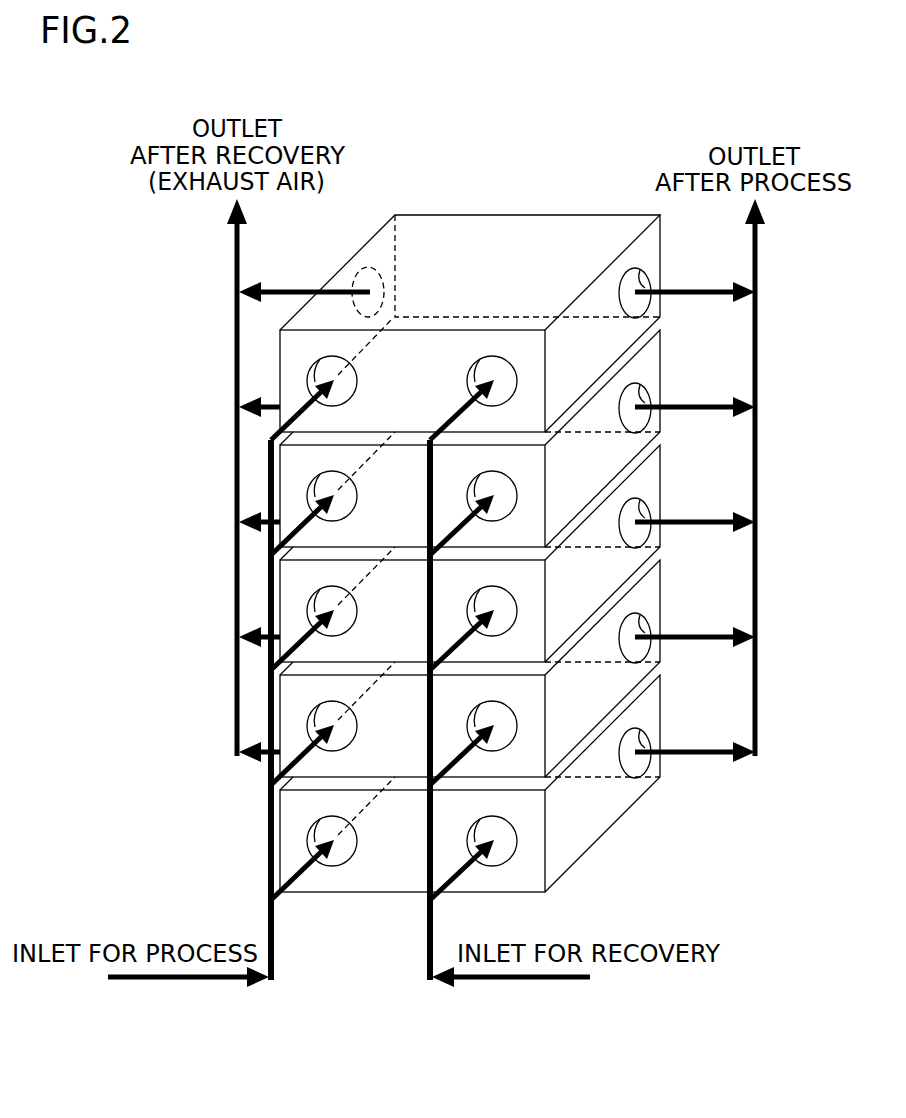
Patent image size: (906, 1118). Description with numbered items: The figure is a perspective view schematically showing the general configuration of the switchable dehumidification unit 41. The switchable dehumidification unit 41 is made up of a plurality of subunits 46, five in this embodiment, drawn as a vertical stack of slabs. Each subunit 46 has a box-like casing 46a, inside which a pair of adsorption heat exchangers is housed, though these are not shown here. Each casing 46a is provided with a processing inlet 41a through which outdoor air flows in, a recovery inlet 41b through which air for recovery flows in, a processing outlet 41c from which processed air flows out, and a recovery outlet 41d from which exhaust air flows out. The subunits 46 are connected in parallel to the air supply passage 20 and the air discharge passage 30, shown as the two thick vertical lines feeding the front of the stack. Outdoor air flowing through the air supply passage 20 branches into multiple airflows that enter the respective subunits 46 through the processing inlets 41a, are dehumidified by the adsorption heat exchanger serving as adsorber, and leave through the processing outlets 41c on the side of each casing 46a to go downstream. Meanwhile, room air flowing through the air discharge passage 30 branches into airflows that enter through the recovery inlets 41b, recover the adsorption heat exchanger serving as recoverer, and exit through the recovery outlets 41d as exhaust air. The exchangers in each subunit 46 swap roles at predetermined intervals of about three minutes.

The switchable dehumidification unit 41 is at (517, 196).
The processing inlet 41a is at (312, 378).
The recovery inlet 41b is at (492, 357).
The processing outlet 41c is at (646, 278).
The recovery outlet 41d is at (366, 268).
The subunit 46 is at (660, 233).
The casing 46a is at (437, 232).
The air supply passage 20 is at (203, 981).
The air discharge passage 30 is at (501, 981).